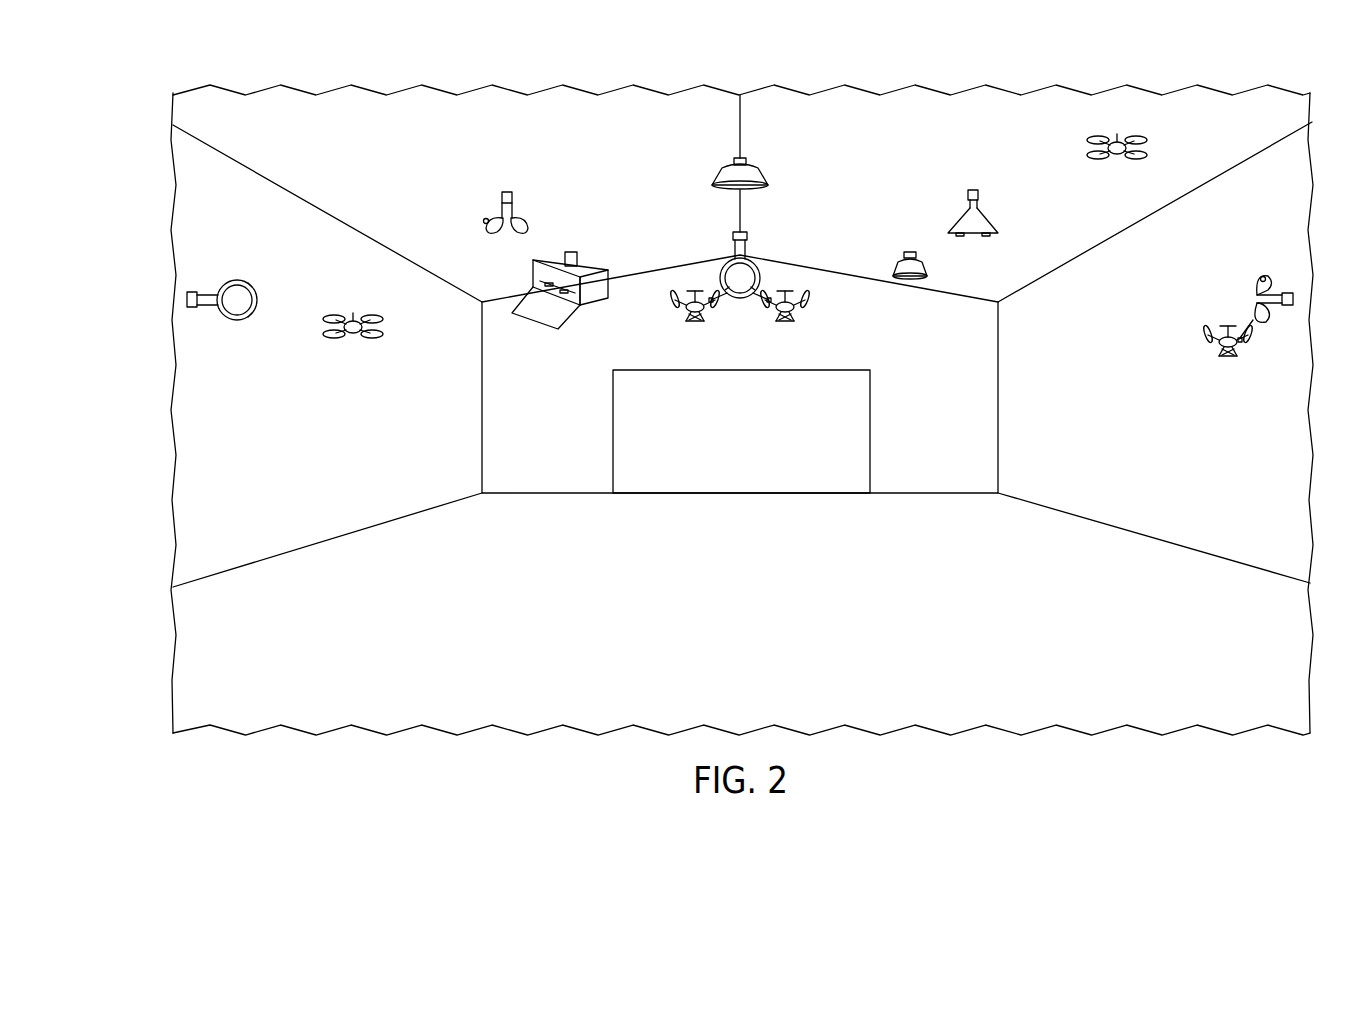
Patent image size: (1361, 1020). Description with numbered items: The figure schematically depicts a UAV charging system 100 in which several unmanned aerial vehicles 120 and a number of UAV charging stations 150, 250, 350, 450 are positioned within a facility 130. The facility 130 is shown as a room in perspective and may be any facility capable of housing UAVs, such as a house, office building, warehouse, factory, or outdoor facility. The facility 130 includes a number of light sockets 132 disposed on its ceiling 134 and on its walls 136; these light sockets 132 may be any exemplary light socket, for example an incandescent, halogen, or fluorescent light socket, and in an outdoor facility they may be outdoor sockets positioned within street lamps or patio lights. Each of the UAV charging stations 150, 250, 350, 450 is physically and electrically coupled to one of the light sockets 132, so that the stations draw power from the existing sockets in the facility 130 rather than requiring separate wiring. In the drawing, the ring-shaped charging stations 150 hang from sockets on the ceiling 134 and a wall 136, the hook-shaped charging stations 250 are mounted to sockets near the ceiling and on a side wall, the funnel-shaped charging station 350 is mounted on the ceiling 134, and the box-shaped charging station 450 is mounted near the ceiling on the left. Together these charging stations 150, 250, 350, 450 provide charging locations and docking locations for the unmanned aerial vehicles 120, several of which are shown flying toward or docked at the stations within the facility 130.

The UAV charging system 100 is at (742, 307).
The unmanned aerial vehicle (drone) 120 is at (352, 340).
The facility 130 is at (741, 749).
The light socket 132 is at (192, 292).
The ceiling 134 is at (508, 97).
The wall 136 is at (188, 547).
The UAV charging station 150 is at (245, 283).
The UAV charging station 250 is at (485, 220).
The UAV charging station 350 is at (998, 231).
The UAV charging station 450 is at (610, 288).